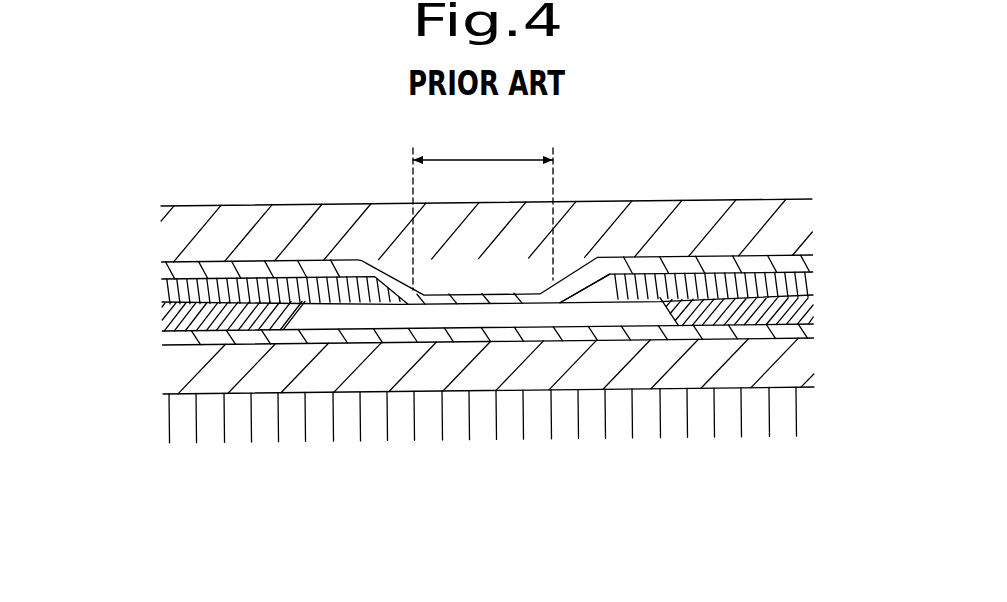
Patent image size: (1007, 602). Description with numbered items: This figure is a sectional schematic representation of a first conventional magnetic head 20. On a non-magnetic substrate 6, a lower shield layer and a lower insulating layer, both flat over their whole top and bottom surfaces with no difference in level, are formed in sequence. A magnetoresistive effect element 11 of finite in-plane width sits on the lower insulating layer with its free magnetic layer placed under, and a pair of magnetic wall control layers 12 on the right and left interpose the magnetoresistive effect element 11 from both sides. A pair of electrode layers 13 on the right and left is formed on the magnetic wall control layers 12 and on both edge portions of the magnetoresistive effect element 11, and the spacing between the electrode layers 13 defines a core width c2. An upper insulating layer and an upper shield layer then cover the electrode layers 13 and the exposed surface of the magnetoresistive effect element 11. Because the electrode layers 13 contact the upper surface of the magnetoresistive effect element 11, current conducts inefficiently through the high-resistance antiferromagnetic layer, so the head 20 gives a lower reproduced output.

The first conventional magnetic head 20 is at (740, 154).
The electrode layers 13 is at (810, 285).
The magnetic wall control layers 12 is at (797, 317).
The non-magnetic substrate 6 is at (783, 417).
The magnetoresistive effect element 11 is at (614, 310).
The core width c2 is at (483, 213).